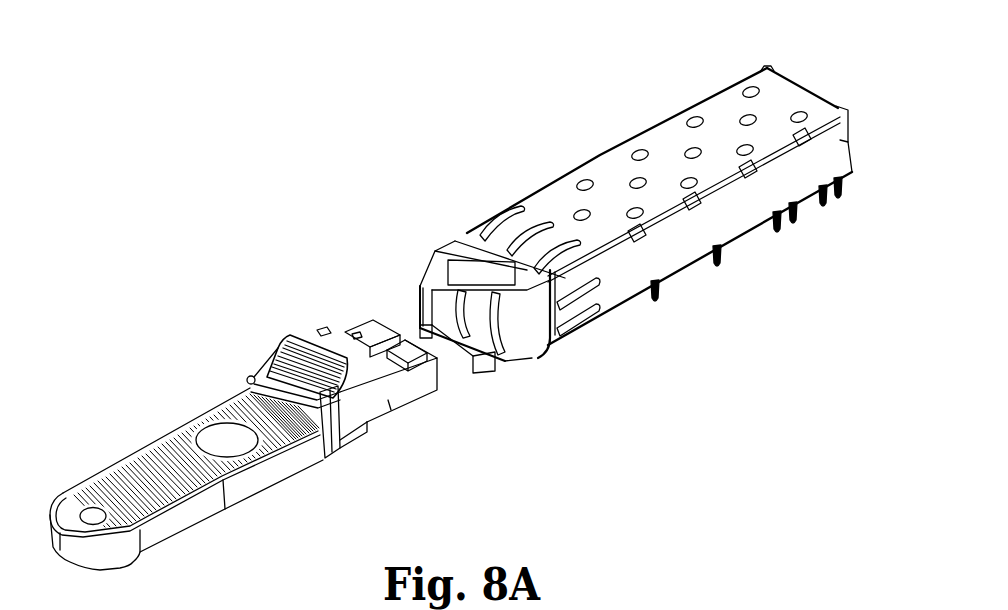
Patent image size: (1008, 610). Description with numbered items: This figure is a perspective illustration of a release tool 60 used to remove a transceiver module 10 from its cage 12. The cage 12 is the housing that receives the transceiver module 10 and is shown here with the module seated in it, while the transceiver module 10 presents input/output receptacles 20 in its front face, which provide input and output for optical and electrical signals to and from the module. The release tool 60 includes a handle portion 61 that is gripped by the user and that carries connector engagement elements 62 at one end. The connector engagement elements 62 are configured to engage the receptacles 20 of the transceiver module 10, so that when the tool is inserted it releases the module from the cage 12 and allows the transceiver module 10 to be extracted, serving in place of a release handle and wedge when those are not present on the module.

The transceiver module 10 is at (653, 197).
The cage 12 is at (768, 135).
The input/output receptacles 20 is at (421, 322).
The release tool 60 is at (245, 415).
The handle portion 61 is at (122, 500).
The connector engagement elements 62 is at (362, 319).